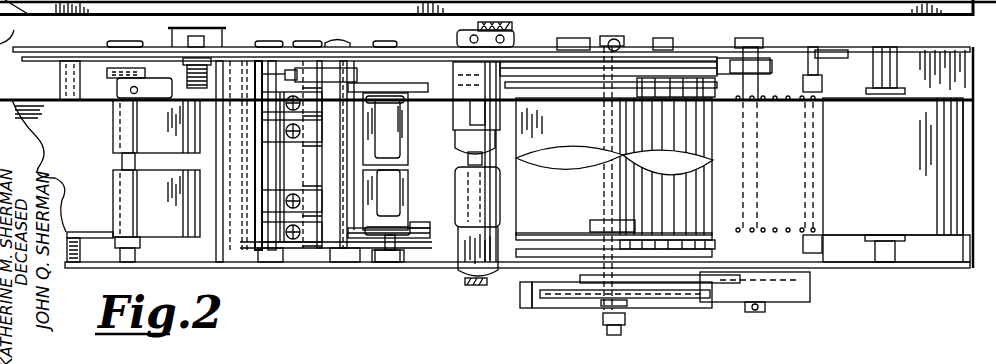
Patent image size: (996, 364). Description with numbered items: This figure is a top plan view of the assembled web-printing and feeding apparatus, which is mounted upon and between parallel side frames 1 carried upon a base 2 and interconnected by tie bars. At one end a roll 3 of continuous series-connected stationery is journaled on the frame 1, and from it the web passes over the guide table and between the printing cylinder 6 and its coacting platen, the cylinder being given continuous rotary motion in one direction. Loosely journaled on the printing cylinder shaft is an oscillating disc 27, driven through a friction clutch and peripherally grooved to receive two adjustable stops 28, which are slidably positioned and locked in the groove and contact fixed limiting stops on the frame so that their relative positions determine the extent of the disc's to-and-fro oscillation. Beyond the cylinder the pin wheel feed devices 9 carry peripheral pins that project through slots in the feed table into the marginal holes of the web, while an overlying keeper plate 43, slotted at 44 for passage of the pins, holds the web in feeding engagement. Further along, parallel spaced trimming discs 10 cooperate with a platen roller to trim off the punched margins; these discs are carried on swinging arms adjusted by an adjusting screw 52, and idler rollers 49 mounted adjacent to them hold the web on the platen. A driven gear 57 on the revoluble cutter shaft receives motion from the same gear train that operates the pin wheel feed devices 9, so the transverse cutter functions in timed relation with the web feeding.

The side frames 1 is at (923, 42).
The base 2 is at (952, 255).
The roll 3 is at (923, 206).
The printing cylinder 6 is at (697, 128).
The pin wheel feed devices 9 is at (420, 232).
The trimming discs 10 is at (327, 223).
The oscillating disc 27 is at (555, 300).
The adjustable stops 28 is at (520, 300).
The keeper plate 43 is at (408, 162).
The slots 44 is at (404, 100).
The idler rollers 49 is at (318, 118).
The adjusting screw 52 is at (295, 240).
The driven gear 57 is at (26, 68).